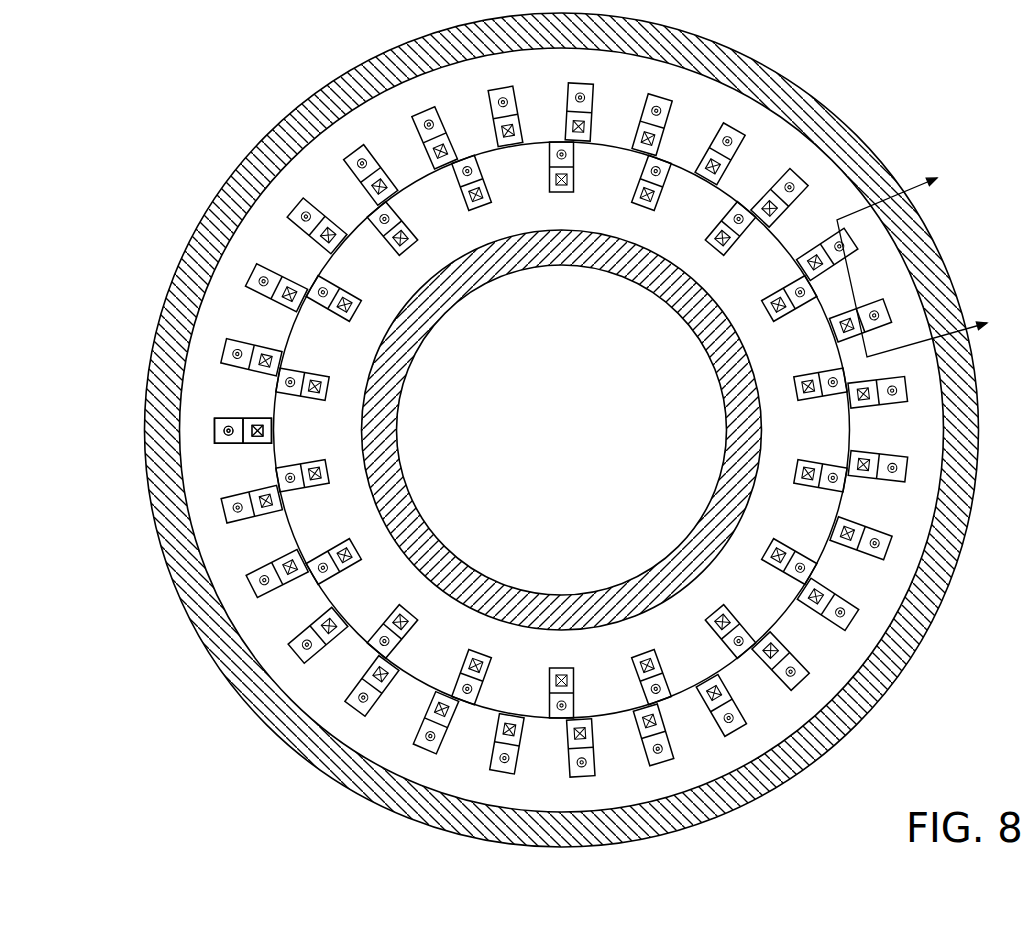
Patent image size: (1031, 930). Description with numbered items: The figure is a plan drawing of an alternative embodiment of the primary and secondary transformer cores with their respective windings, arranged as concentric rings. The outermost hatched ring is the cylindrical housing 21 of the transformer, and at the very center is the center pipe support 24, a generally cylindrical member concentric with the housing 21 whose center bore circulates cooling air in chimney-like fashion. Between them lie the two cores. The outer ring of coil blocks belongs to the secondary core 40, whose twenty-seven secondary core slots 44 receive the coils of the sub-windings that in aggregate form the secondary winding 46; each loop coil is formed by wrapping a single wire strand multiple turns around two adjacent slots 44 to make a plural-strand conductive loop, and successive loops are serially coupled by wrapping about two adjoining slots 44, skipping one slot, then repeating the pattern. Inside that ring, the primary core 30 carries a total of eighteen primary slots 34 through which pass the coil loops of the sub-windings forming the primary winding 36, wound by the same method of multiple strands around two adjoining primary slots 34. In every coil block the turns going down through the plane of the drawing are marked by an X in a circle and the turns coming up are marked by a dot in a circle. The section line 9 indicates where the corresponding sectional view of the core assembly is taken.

The cylindrical housing 21 is at (174, 173).
The center pipe support 24 is at (423, 348).
The primary core 30 is at (428, 196).
The primary slots 34 is at (412, 248).
The primary winding 36 is at (328, 463).
The secondary core 40 is at (845, 700).
The secondary core slots 44 is at (297, 212).
The secondary winding 46 is at (226, 432).
The section line 9- 9 is at (925, 258).